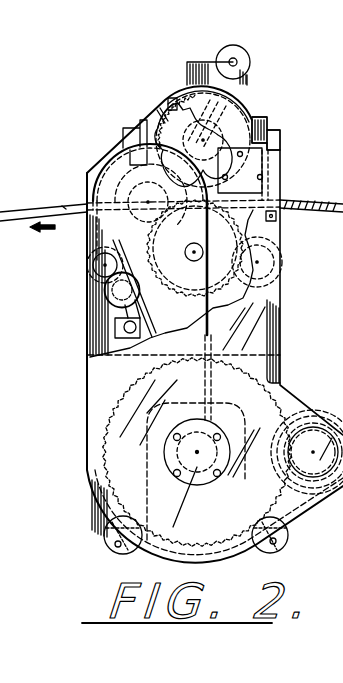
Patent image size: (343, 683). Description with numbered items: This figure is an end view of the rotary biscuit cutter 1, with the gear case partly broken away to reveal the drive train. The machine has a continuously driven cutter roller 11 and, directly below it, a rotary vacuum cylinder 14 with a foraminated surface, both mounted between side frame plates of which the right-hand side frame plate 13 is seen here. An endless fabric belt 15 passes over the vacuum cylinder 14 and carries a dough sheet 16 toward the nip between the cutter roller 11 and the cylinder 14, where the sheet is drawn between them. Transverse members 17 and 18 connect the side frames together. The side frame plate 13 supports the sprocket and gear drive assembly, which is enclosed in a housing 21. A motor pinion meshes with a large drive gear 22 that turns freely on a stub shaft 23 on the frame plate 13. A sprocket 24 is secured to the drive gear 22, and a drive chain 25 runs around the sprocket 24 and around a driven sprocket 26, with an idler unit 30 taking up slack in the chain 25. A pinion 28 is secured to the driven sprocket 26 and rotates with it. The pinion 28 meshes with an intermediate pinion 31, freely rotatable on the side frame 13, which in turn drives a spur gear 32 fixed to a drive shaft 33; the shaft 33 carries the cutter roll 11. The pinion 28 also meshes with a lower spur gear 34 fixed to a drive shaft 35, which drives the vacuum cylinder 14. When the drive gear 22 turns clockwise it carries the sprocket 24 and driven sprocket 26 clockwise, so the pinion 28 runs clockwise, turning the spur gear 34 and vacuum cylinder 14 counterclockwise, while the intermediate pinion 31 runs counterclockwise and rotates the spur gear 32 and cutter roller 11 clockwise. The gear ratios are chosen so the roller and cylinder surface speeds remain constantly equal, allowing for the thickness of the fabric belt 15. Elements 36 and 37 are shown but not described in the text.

The rotary biscuit cutter 1 is at (80, 309).
The cutter roller 11 is at (255, 112).
The side frame plate 13 is at (92, 500).
The rotary vacuum cylinder 14 is at (267, 308).
The fabric belt 15 is at (72, 217).
The dough sheet 16 is at (63, 210).
The transverse member 17 is at (105, 538).
The transverse member 18 is at (289, 526).
The housing 21 is at (88, 378).
The drive gear 22 is at (107, 422).
The stub shaft 23 is at (189, 481).
The sprocket 24 is at (168, 458).
The drive chain 25 is at (206, 308).
The driven sprocket 26 is at (110, 175).
The pinion 28 is at (115, 190).
The idler unit 30 is at (122, 313).
The intermediate pinion 31 is at (112, 150).
The spur gear 32 is at (163, 107).
The drive shaft 33 is at (263, 118).
The spur gear 34 is at (223, 282).
The drive shaft 35 is at (203, 267).
The pin 36 is at (168, 100).
The cover plate 37 is at (236, 60).